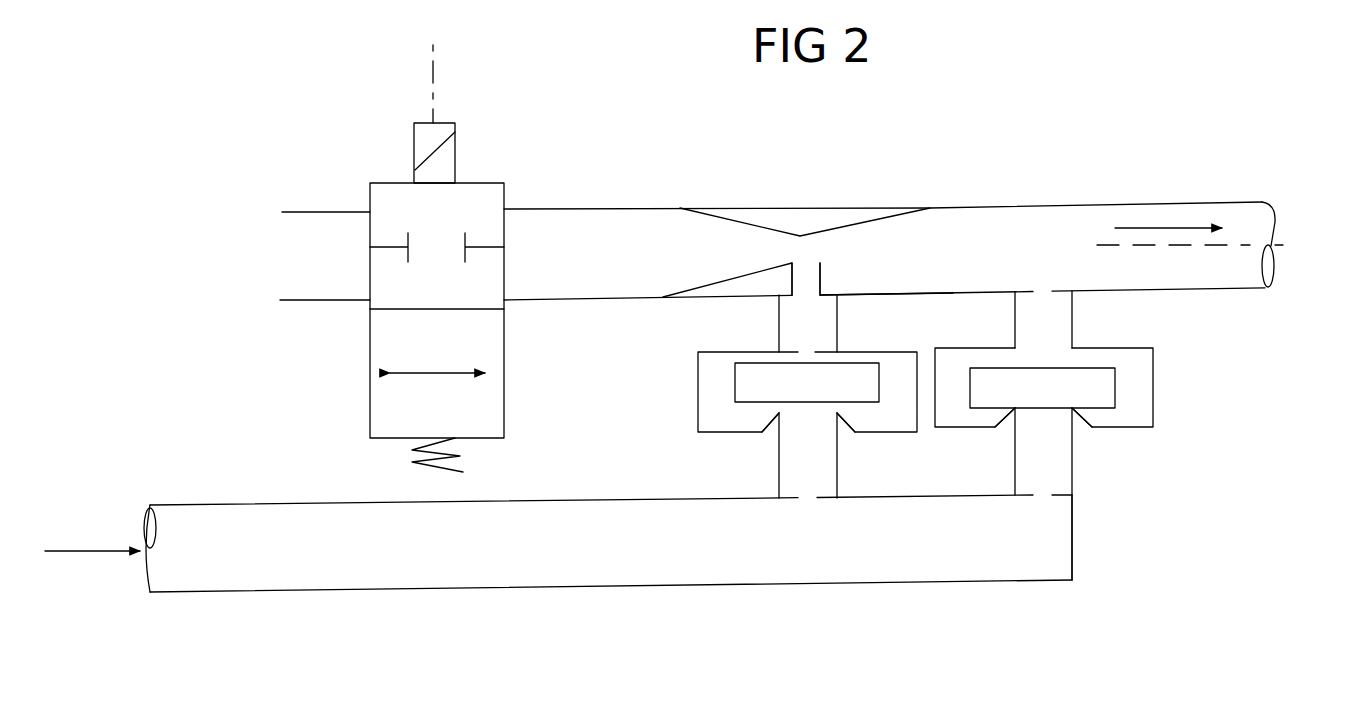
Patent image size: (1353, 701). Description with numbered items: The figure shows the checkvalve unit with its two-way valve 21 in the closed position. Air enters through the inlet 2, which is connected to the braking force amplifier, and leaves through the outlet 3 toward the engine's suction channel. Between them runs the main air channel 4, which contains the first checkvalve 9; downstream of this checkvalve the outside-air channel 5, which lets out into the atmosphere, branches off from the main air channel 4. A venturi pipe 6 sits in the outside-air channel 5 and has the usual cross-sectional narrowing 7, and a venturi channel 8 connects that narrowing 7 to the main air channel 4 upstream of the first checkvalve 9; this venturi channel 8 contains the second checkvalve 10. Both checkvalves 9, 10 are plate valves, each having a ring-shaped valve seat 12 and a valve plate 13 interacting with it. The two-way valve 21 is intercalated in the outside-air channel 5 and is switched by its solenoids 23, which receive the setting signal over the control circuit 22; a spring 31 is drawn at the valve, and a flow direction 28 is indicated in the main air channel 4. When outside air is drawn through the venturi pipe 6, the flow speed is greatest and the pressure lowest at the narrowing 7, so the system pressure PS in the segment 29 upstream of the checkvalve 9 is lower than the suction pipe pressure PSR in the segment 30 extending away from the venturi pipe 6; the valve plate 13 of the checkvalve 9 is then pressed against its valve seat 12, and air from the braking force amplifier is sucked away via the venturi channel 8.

The inlet 2 is at (138, 572).
The outlet 3 is at (1282, 218).
The main air channel 4 is at (1197, 275).
The outside-air channel 5 is at (634, 225).
The venturi pipe 6 is at (876, 208).
The cross-sectional narrowing 7 is at (805, 254).
The venturi channel 8 is at (790, 318).
The first checkvalve 9 is at (1156, 393).
The second checkvalve 10 is at (726, 387).
The ring-shaped valve seat 12 is at (848, 428).
The valve plate 13 is at (752, 395).
The 2-way valve 21 is at (289, 236).
The control circuit 22 is at (436, 50).
The solenoids 23 is at (456, 128).
The flow direction 28 is at (1182, 225).
The segment 29 is at (950, 555).
The segment 30 is at (1252, 208).
The return spring 31 is at (462, 456).
The system pressure PS is at (257, 563).
The suction pipe pressure PSR is at (1088, 233).